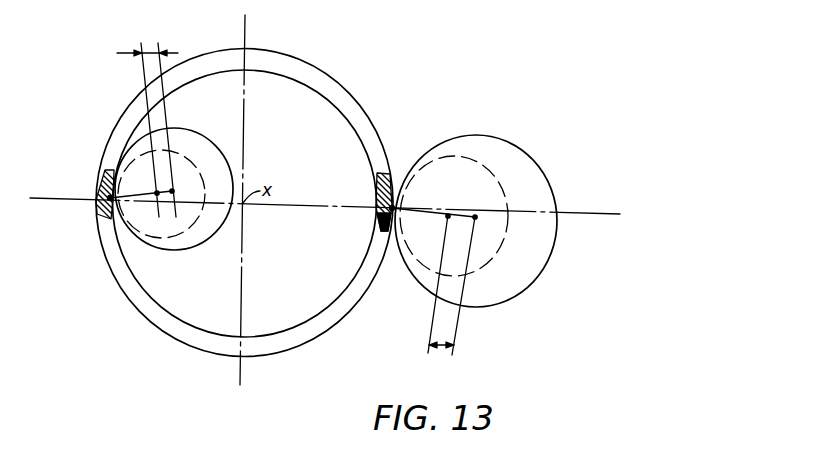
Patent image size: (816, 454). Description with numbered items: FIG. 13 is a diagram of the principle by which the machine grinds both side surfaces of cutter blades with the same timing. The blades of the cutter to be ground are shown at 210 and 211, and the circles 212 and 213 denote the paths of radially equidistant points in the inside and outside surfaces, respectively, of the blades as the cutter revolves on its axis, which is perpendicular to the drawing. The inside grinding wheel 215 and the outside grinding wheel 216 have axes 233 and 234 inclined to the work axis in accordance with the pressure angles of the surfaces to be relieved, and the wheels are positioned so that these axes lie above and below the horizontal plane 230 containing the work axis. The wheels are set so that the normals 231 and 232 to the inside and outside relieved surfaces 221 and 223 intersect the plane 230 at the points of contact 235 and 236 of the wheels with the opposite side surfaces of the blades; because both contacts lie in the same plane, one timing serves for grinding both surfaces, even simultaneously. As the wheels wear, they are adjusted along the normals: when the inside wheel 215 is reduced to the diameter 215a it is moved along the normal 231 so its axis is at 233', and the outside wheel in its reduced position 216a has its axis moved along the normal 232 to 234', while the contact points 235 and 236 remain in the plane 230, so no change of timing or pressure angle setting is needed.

The blade 210 is at (102, 184).
The blade 211 is at (378, 181).
The circle 212 is at (184, 323).
The circle 213 is at (195, 349).
The inside grinding wheel 215 is at (194, 250).
The reduced diameter of inside grinding wheel 215a is at (198, 216).
The outside grinding wheel 216 is at (527, 291).
The reduced-diameter position of outside grinding wheel 216a is at (491, 260).
The inside relieved surface 221 is at (110, 142).
The outside relieved surface 223 is at (397, 173).
The horizontal plane 230 is at (318, 209).
The normal 231 is at (157, 193).
The normal 232 is at (429, 218).
The axis of inside grinding wheel 233 is at (189, 180).
The adjusted axis position of inside wheel 233' is at (151, 218).
The axis of outside grinding wheel 234 is at (461, 236).
The adjusted axis position of outside wheel 234' is at (469, 198).
The point of contact 235 is at (102, 205).
The point of contact 236 is at (394, 208).